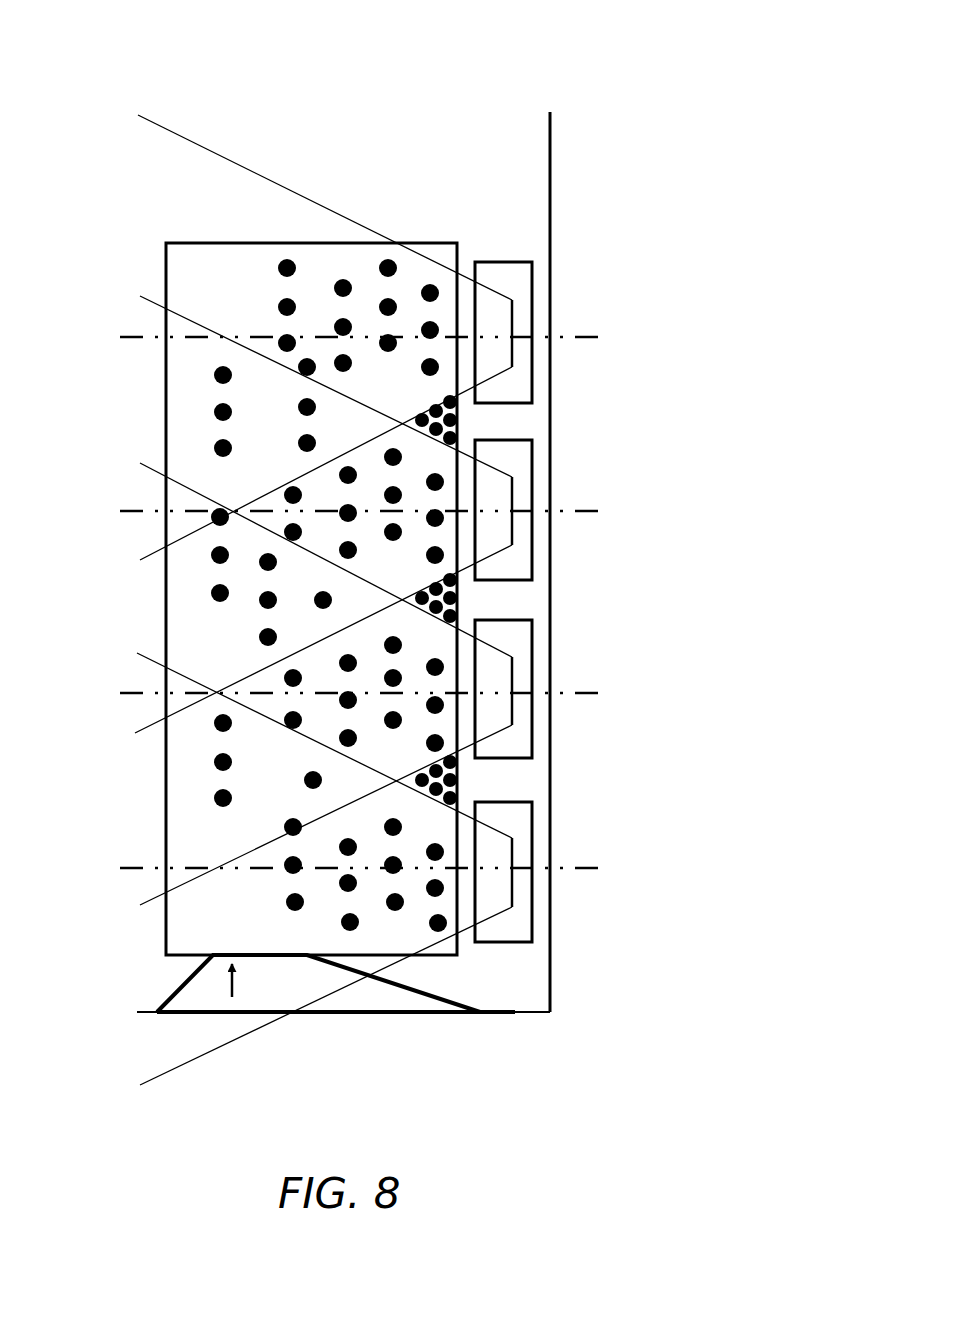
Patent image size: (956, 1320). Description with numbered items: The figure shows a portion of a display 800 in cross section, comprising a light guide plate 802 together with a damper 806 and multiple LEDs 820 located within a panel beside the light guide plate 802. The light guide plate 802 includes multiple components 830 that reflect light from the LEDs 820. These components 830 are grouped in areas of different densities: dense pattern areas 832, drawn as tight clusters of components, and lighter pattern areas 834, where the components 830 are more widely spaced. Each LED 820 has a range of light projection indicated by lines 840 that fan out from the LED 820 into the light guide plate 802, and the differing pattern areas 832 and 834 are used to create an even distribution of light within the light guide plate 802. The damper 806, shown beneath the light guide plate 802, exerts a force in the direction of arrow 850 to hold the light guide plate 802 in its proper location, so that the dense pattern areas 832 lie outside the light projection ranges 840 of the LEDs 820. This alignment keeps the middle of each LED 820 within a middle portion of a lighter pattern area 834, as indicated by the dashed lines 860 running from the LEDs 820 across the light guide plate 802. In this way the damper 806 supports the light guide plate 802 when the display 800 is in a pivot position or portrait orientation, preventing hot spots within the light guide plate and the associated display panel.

The display 800 is at (620, 106).
The light guide plate 802 is at (212, 238).
The damper 806 is at (163, 986).
The LEDs 820 is at (512, 288).
The components 830 is at (276, 296).
The dense pattern areas 832 is at (461, 420).
The lighter pattern areas 834 is at (278, 438).
The lines 840 is at (302, 605).
The arrow 850 is at (257, 981).
The dashed lines 860 is at (338, 603).